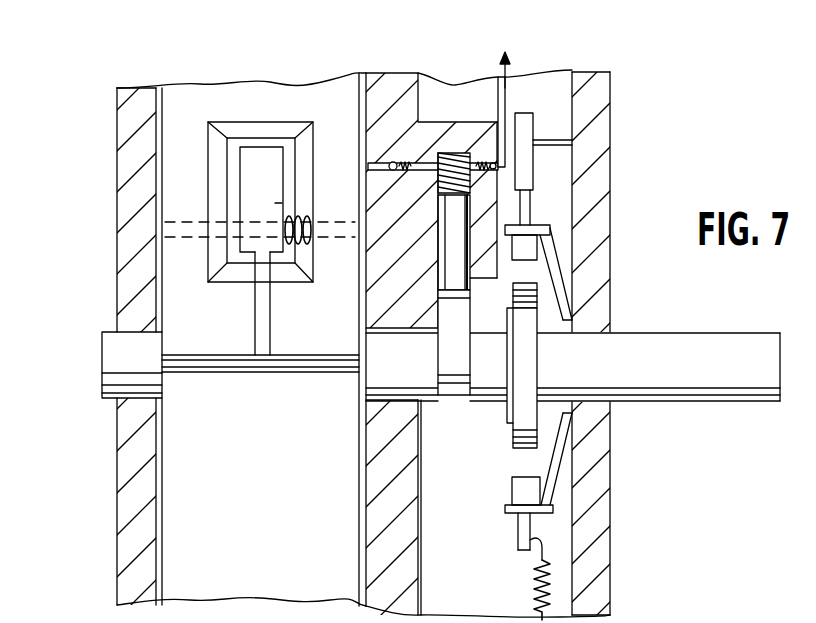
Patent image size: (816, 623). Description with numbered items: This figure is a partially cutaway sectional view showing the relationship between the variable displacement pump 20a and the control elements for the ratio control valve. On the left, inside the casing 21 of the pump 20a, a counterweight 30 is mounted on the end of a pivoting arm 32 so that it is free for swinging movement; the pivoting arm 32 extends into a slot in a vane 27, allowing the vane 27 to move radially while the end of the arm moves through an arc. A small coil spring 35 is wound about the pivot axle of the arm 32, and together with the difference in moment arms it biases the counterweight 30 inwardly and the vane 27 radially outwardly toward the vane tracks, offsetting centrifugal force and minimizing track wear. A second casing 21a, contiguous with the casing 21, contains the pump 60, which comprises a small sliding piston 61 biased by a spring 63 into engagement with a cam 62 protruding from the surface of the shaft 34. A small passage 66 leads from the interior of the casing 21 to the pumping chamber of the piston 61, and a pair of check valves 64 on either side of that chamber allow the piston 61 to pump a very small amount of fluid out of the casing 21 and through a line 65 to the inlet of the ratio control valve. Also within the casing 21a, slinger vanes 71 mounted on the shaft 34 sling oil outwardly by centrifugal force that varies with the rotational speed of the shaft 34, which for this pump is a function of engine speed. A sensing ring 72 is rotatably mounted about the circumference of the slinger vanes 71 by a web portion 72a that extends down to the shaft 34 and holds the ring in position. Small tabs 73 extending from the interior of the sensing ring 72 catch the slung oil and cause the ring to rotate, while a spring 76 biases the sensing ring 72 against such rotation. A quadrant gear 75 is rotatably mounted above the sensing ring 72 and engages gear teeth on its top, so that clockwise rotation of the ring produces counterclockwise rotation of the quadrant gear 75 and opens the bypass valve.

The pump 20a is at (110, 198).
The casing 21 is at (125, 129).
The second casing 21a is at (602, 126).
The vane 27 is at (312, 365).
The counterweight 30 is at (275, 175).
The pivoting arm 32 is at (265, 323).
The shaft 34 is at (680, 348).
The coil spring 35 is at (302, 213).
The pump 60 is at (428, 232).
The sliding piston 61 is at (447, 257).
The cam 62 is at (448, 345).
The spring 63 is at (447, 150).
The check valves 64 is at (380, 190).
The line 65 is at (508, 92).
The passage 66 is at (383, 160).
The slinger vanes 71 is at (523, 405).
The sensing ring 72 is at (560, 218).
The web portion 72a is at (560, 287).
The tabs 73 is at (520, 490).
The quadrant gear 75 is at (531, 116).
The spring 76 is at (545, 580).